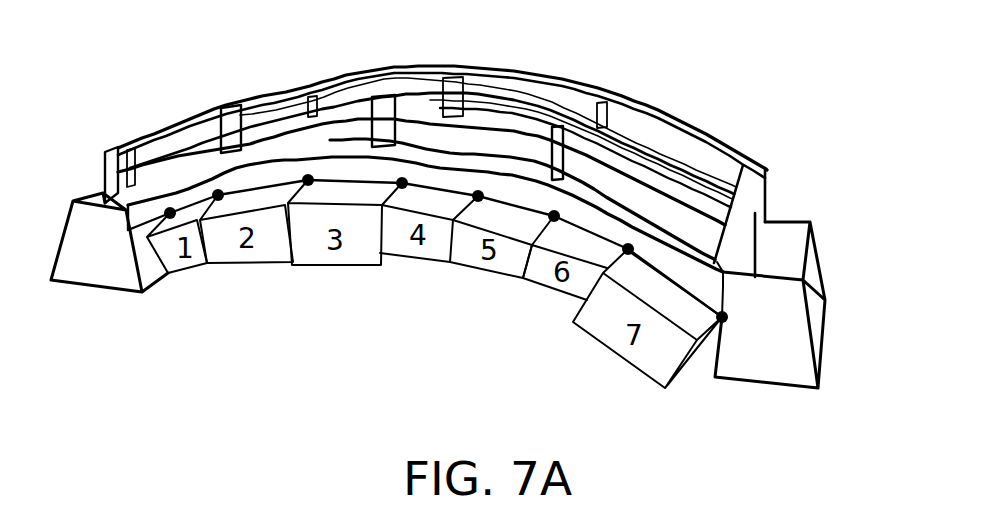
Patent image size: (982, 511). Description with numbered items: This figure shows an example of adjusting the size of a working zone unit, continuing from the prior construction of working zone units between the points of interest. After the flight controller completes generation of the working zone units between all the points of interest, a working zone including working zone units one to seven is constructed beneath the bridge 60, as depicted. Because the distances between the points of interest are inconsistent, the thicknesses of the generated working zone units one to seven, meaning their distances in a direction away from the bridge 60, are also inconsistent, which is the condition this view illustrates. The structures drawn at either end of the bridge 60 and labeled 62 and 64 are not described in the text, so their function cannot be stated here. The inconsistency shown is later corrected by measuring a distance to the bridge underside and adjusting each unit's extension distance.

The bridge 60 is at (604, 102).
The right end block 62 is at (772, 363).
The left end block 64 is at (102, 275).